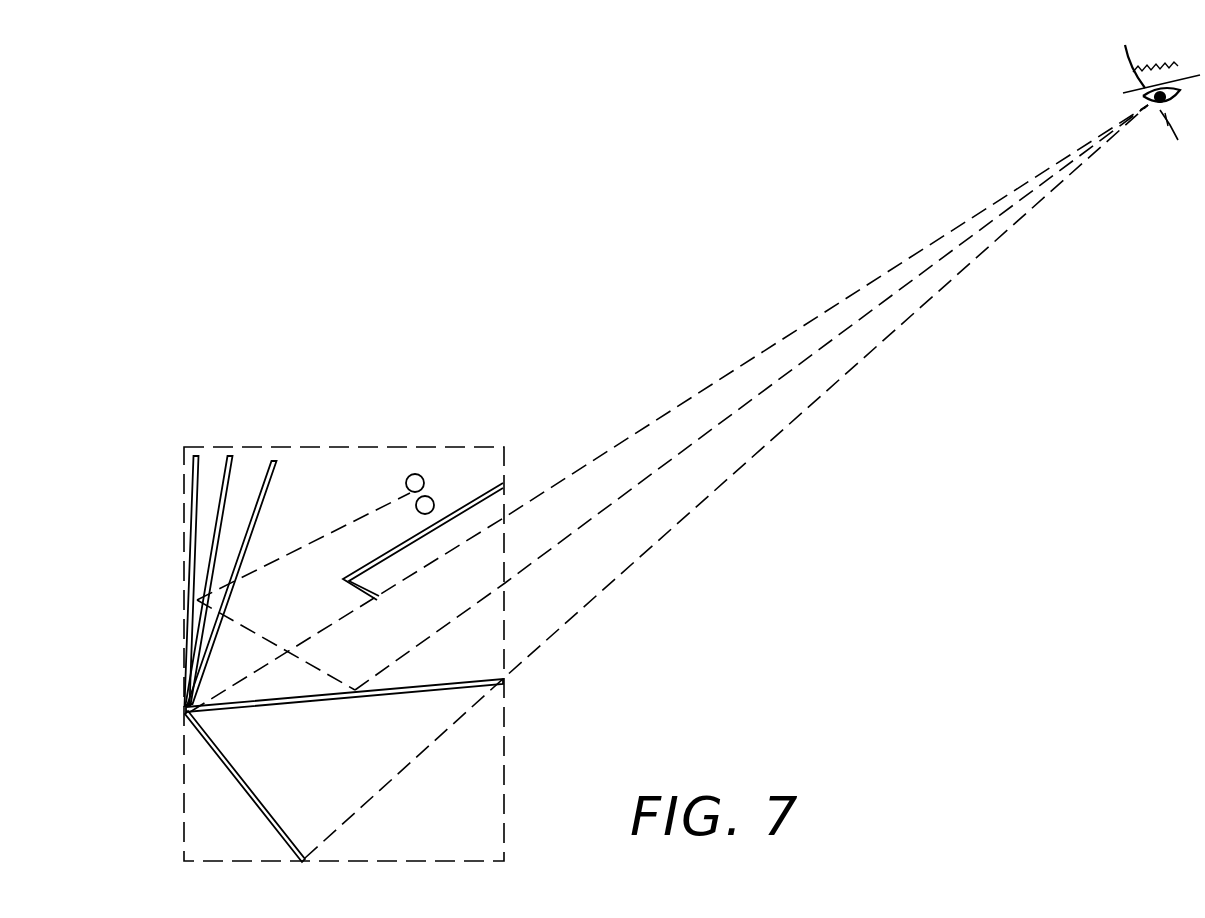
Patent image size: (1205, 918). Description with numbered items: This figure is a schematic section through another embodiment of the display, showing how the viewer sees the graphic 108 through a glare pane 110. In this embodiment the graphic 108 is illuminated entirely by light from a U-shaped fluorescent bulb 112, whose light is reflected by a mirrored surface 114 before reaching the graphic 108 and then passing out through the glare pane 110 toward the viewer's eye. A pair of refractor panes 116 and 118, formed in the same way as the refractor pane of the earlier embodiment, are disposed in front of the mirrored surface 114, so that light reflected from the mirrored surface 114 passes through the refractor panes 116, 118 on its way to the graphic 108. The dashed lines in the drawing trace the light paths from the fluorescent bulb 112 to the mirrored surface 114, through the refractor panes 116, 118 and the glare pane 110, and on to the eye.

The graphic 108 is at (217, 743).
The glare pane 110 is at (433, 692).
The U-shaped fluorescent bulb 112 is at (412, 474).
The mirrored surface 114 is at (197, 481).
The refractor pane 116 is at (232, 480).
The refractor pane 118 is at (280, 483).